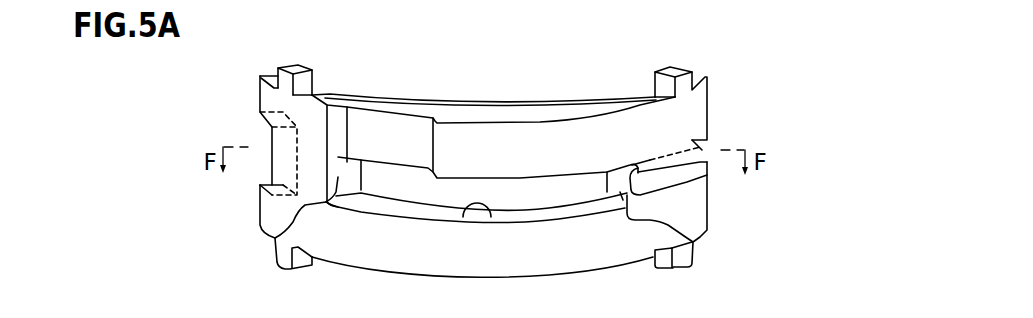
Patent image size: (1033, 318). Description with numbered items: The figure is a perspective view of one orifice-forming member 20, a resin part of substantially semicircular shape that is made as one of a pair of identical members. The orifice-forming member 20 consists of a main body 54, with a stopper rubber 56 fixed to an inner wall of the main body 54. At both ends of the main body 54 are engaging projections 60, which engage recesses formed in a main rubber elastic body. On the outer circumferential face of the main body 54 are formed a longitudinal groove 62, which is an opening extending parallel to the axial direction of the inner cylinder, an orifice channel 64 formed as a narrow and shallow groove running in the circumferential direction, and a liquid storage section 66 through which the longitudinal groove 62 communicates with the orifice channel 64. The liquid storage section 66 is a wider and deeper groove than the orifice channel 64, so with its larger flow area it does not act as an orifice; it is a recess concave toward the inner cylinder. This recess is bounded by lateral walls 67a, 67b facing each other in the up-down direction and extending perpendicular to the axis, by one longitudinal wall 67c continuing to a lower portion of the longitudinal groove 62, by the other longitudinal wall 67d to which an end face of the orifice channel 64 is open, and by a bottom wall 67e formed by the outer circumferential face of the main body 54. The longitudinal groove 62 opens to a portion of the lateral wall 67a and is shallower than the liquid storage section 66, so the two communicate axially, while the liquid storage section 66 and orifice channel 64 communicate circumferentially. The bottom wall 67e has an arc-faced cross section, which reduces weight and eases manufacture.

The orifice-forming member 20 is at (628, 65).
The main body 54 is at (472, 117).
The stopper rubber 56 is at (528, 97).
The engaging projection 60 is at (260, 102).
The longitudinal groove 62 is at (340, 137).
The orifice channel 64 is at (697, 176).
The liquid storage section 66 is at (509, 199).
The lateral wall 67a is at (571, 177).
The lateral wall 67b is at (492, 218).
The longitudinal wall 67c is at (275, 240).
The longitudinal wall 67d is at (697, 233).
The bottom wall 67e is at (432, 196).